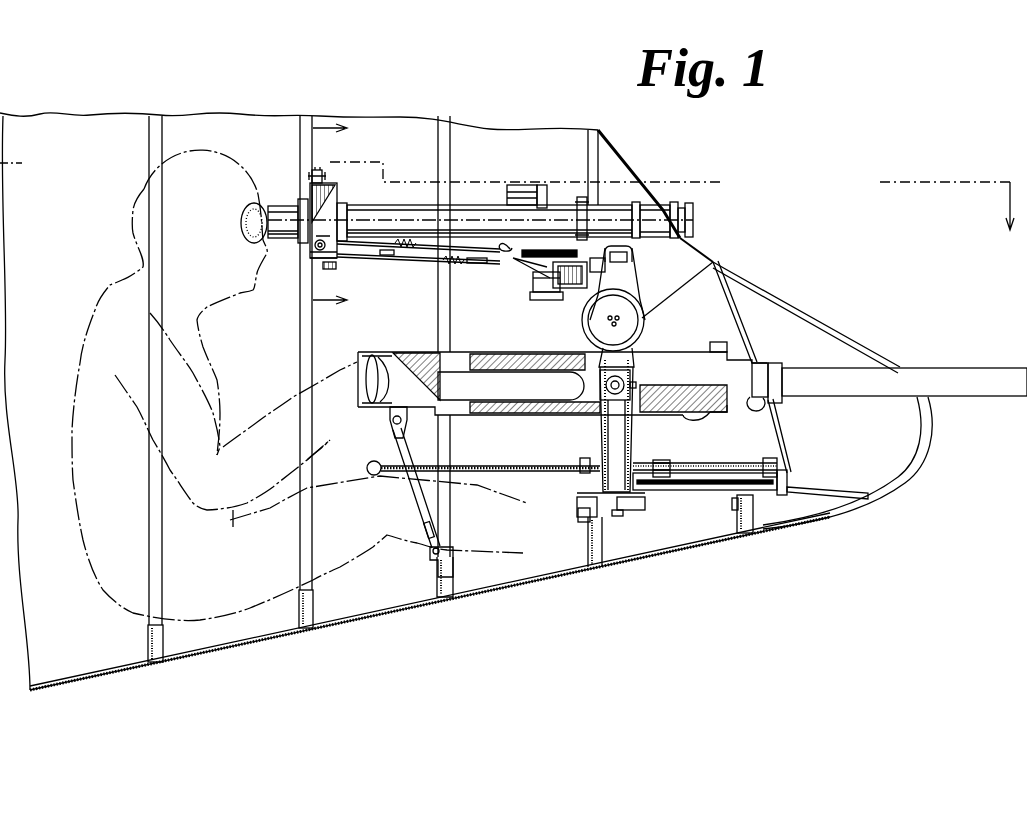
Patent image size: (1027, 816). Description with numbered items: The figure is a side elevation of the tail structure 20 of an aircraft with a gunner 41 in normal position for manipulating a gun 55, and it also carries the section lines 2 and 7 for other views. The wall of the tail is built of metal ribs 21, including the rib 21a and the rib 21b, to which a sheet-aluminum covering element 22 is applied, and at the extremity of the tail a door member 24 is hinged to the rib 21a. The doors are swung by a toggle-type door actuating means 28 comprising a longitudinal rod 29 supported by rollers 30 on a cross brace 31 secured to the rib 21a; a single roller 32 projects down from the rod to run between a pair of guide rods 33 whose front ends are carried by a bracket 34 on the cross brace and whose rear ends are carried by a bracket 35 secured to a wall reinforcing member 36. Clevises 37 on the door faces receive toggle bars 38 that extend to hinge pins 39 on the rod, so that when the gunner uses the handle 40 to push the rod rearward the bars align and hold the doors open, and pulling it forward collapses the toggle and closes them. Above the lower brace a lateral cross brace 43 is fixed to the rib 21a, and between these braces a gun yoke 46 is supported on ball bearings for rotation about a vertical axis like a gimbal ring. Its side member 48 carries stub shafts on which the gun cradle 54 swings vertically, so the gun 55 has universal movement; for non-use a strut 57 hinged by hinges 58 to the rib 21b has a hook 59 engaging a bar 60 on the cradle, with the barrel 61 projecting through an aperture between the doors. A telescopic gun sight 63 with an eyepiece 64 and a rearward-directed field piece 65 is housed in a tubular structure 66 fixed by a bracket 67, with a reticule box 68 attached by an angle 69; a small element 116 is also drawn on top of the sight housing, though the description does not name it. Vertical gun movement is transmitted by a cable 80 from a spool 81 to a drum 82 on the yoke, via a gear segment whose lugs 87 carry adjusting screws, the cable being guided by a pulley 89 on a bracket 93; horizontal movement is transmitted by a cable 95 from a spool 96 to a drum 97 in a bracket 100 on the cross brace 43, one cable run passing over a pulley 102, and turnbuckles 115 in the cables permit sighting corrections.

The section line 2- 2 is at (1010, 218).
The section line 7- 7 is at (337, 213).
The tail structure 20 is at (251, 102).
The metal ribs 21 is at (158, 645).
The rib 21a is at (585, 568).
The rib 21b is at (428, 595).
The covering element 22 is at (82, 135).
The door member 24 is at (822, 330).
The door actuating means 28 is at (658, 465).
The longitudinal rod 29 is at (518, 465).
The rollers 30 is at (580, 473).
The cross brace 31 is at (578, 518).
The roller 32 is at (665, 492).
The guide rods 33 is at (717, 490).
The bracket 34 is at (633, 505).
The bracket 35 is at (765, 494).
The wall reinforcing member 36 is at (752, 500).
The clevises 37 is at (786, 472).
The toggle bars 38 is at (775, 460).
The hinge pins 39 is at (675, 461).
The handle 40 is at (372, 477).
The gunner 41 is at (105, 295).
The lateral cross brace 43 is at (567, 284).
The gun yoke 46 is at (652, 446).
The side member 48 is at (642, 342).
The gun cradle 54 is at (504, 352).
The gun 55 is at (727, 341).
The strut 57 is at (417, 508).
The hinges 58 is at (430, 553).
The hook 59 is at (408, 425).
The bar 60 is at (392, 424).
The barrel 61 is at (945, 374).
The telescopic gun sight 63 is at (468, 206).
The eyepiece 64 is at (284, 212).
The field piece 65 is at (656, 216).
The tubular structure 66 is at (420, 210).
The bracket 67 is at (584, 232).
The reticule box 68 is at (341, 197).
The angle 69 is at (322, 172).
The cable 80 is at (413, 266).
The spool 81 is at (328, 270).
The drum 82 is at (610, 327).
The lugs 87 is at (636, 378).
The pulley 89 is at (630, 256).
The bracket 93 is at (630, 268).
The cable 95 is at (425, 246).
The spool 96 is at (316, 249).
The drum 97 is at (548, 249).
The bracket 100 is at (543, 277).
The pulley 102 is at (511, 252).
The turnbuckles 115 is at (386, 258).
The sight 116 is at (531, 172).